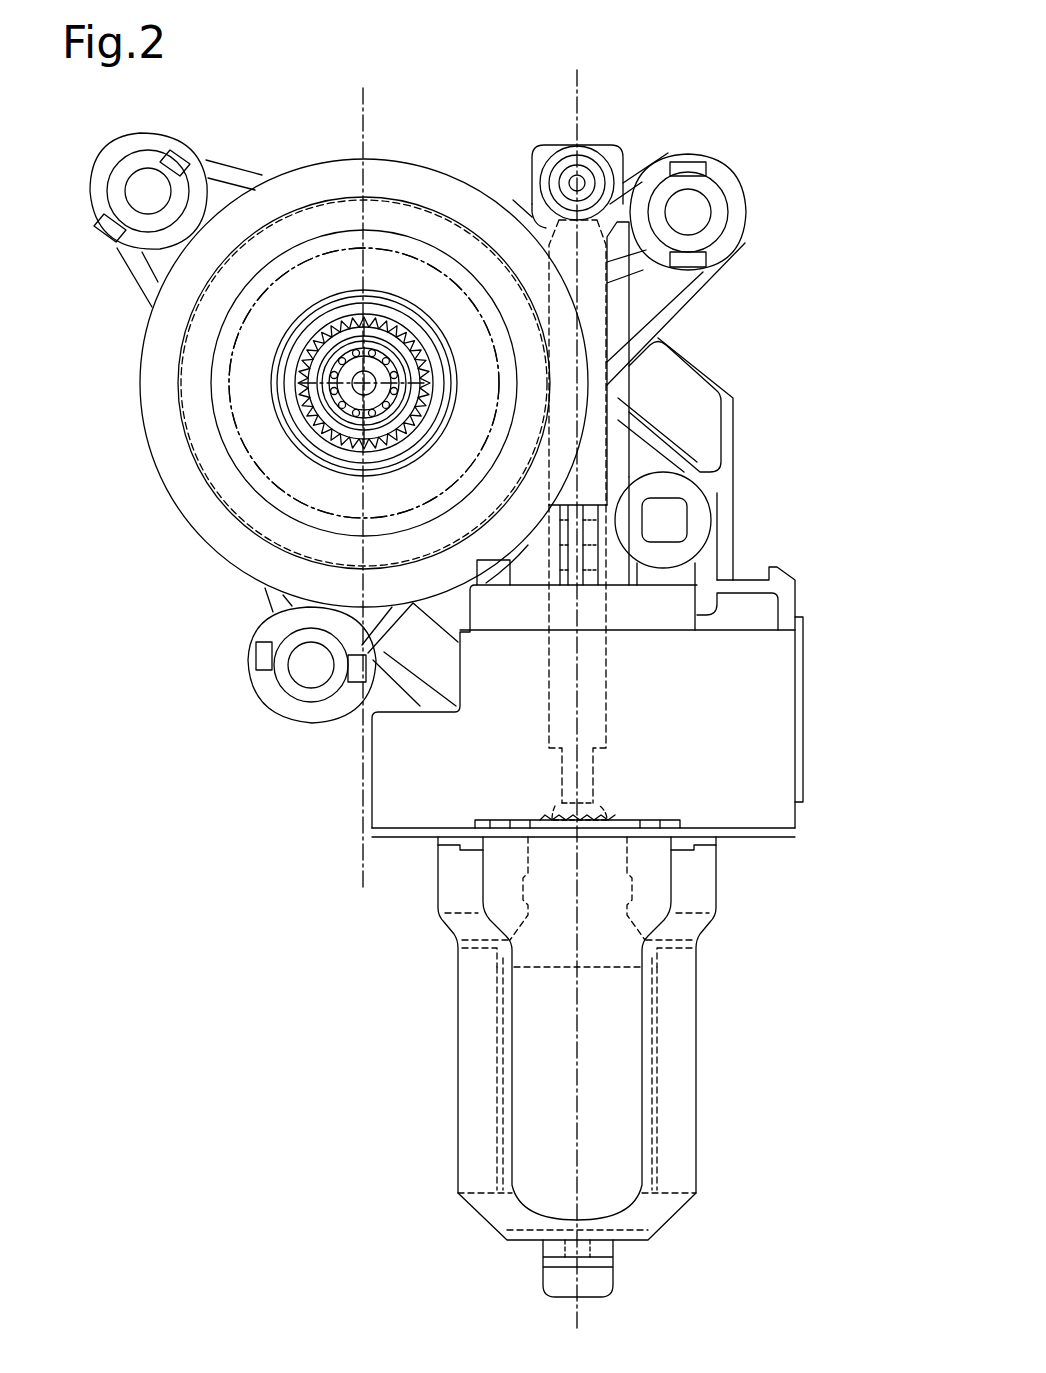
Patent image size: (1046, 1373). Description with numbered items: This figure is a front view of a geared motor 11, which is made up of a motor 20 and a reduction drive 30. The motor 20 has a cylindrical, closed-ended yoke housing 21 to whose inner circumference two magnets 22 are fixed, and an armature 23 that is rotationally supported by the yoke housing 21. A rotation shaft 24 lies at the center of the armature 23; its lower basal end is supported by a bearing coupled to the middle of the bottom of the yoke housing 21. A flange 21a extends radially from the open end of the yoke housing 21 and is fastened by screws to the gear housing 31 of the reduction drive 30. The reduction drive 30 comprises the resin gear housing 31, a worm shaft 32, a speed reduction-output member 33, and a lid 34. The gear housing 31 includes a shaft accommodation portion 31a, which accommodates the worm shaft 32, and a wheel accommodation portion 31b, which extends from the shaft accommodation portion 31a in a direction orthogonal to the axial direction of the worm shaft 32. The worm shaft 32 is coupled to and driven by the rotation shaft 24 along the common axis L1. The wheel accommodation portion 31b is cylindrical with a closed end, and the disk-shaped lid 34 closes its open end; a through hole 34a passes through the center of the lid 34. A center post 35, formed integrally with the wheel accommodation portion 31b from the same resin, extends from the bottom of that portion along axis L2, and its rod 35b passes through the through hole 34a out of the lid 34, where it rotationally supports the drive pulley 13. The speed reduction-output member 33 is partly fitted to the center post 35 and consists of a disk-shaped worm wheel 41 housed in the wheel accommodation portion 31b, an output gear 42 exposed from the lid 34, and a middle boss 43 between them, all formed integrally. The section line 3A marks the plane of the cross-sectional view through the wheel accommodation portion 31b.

The geared motor 11 is at (126, 801).
The drive pulley 13 is at (237, 372).
The motor 20 is at (435, 1061).
The yoke housing 21 is at (468, 1208).
The flange 21a is at (406, 840).
The magnets 22 is at (496, 1067).
The armature 23 is at (640, 1232).
The rotation shaft 24 is at (556, 778).
The reduction drive 30 is at (186, 799).
The gear housing 31 is at (580, 353).
The shaft accommodation portion 31a is at (545, 205).
The wheel accommodation portion 31b is at (540, 112).
The worm shaft 32 is at (604, 648).
The speed reduction-output member 33 is at (364, 383).
The lid 34 is at (176, 487).
The through hole 34a is at (392, 455).
The center post 35 is at (364, 383).
The rod 35b is at (300, 398).
The worm wheel 41 is at (232, 520).
The output gear 42 is at (330, 452).
The middle boss 43 is at (318, 444).
The axis of rotation shaft L1 is at (582, 86).
The axis of center post L2 is at (356, 378).
The section line 3A is at (363, 88).